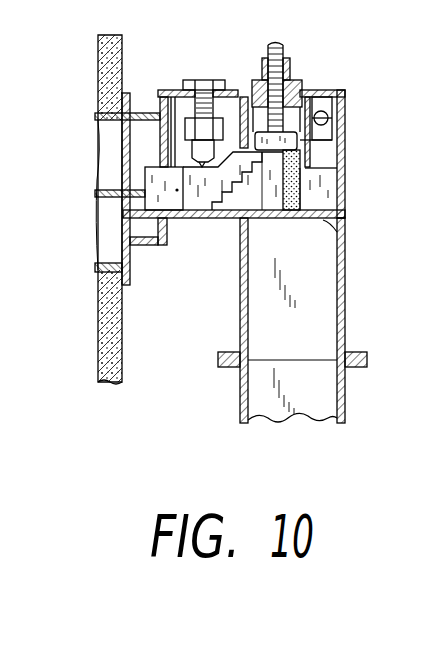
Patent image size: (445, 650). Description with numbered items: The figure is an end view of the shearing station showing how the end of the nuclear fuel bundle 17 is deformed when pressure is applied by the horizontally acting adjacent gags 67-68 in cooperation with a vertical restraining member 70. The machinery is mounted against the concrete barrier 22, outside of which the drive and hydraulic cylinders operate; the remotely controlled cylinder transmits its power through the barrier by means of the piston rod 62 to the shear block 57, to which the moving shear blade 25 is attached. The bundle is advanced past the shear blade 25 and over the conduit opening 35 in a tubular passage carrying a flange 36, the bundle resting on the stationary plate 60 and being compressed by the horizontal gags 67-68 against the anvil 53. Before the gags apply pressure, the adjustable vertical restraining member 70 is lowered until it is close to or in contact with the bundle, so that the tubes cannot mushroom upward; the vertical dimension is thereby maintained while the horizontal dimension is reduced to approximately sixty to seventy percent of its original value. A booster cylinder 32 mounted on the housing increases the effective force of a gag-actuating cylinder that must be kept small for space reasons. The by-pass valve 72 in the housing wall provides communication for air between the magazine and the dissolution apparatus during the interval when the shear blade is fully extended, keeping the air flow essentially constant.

The nuclear fuel bundle 17 is at (336, 172).
The concrete barrier 22 is at (98, 370).
The moving shear blade 25 is at (193, 198).
The booster cylinder 32 is at (212, 80).
The conduit opening 35 is at (315, 272).
The flange 36 is at (345, 324).
The anvil 53 is at (325, 210).
The shear block 57 is at (170, 202).
The stationary plate 60 is at (345, 233).
The piston rod 62 is at (110, 196).
The adjacent horizontal gags 67-68 is at (265, 190).
The adjustable vertical restraining member 70 is at (297, 141).
The by-pass valve 72 is at (326, 114).